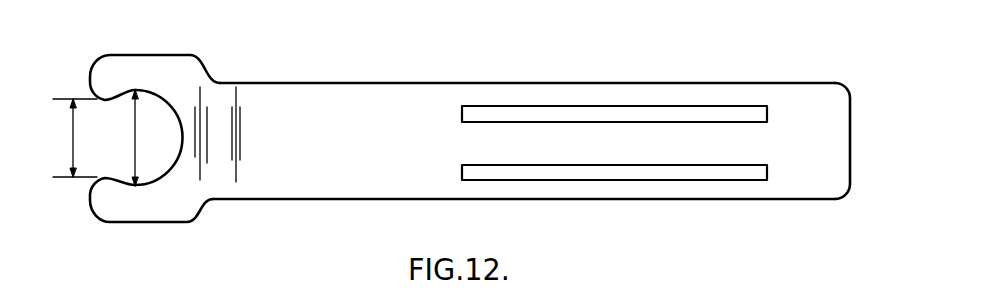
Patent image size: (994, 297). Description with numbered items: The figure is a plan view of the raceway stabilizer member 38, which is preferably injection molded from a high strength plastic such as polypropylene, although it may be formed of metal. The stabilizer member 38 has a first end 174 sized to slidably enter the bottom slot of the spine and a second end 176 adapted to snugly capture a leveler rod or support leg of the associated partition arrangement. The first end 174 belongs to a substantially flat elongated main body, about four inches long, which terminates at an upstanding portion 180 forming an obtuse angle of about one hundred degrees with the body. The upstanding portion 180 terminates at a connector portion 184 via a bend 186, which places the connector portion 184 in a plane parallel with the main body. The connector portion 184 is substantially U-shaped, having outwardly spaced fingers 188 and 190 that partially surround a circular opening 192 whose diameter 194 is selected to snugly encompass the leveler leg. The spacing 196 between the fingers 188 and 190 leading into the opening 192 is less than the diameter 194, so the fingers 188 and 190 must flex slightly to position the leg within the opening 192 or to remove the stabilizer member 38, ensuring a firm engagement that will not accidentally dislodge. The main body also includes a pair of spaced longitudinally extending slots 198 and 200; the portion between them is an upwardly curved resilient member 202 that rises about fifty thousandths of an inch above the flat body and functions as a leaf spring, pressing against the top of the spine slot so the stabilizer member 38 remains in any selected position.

The raceway stabilizer member 38 is at (444, 58).
The first end 174 is at (853, 115).
The second end 176 is at (163, 137).
The upstanding portion 180 is at (222, 168).
The connector portion 184 is at (186, 78).
The bend 186 is at (204, 110).
The finger 188 is at (130, 59).
The finger 190 is at (138, 205).
The circular opening 192 is at (180, 119).
The diameter 194 is at (135, 130).
The spacing 196 is at (76, 125).
The slot 198 is at (625, 109).
The slot 200 is at (691, 175).
The upwardly curved resilient member 202 is at (632, 147).